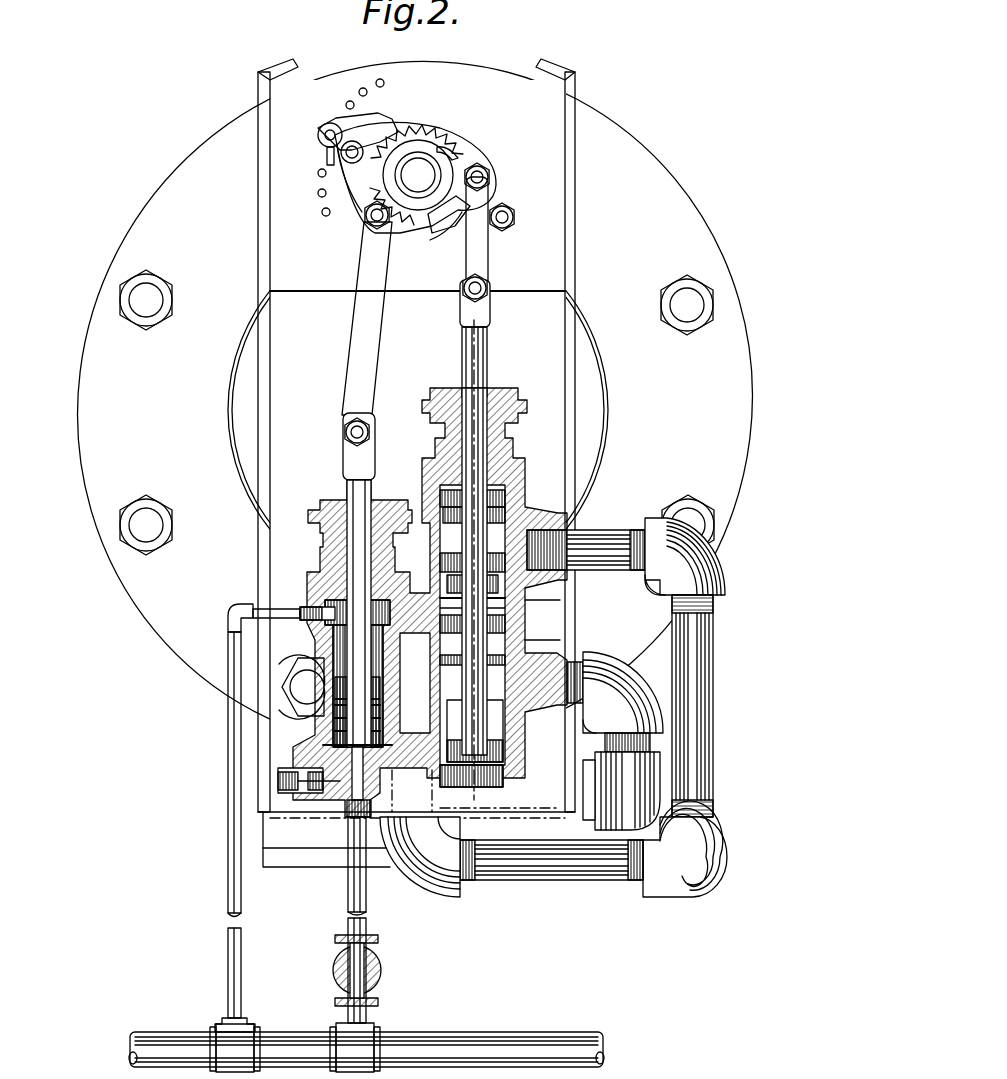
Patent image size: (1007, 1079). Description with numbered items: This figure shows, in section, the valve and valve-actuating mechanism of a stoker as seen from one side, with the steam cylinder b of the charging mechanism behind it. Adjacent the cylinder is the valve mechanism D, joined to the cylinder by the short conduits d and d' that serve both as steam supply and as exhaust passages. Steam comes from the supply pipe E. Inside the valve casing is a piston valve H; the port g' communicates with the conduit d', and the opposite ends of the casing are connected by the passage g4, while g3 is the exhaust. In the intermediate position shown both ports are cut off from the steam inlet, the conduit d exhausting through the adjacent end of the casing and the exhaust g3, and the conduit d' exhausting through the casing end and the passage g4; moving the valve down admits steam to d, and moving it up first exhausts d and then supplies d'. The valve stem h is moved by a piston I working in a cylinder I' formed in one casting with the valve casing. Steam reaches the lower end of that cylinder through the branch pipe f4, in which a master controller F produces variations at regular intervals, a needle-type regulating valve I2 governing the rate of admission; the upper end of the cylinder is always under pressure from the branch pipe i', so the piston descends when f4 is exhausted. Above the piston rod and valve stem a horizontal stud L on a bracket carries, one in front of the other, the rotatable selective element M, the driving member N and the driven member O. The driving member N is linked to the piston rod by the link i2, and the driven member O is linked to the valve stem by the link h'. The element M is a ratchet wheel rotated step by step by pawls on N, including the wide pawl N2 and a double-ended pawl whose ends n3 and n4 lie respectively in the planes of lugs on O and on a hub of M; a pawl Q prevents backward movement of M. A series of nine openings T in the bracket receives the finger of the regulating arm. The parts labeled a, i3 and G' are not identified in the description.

The steam cylinder b is at (436, 434).
The driven member O is at (470, 160).
The horizontal stud L is at (408, 176).
The rotatable selective element M is at (407, 130).
The pawl end n3 is at (455, 160).
The wide pawl N2 is at (366, 133).
The driving member N is at (360, 200).
The openings T is at (380, 79).
The pawl Q is at (452, 228).
The pawl end n4 is at (437, 230).
The link i2 is at (360, 348).
The valve stem i3 is at (350, 488).
The link h' is at (495, 252).
The valve stem h is at (496, 362).
The valve casing a is at (527, 482).
The cylinder I' is at (302, 613).
The piston I is at (269, 766).
The regulating valve I2 is at (275, 778).
The passage g4 is at (530, 505).
The port g' is at (530, 545).
The piston valve H is at (512, 598).
The valve mechanism D is at (545, 617).
The valve G' is at (500, 640).
The exhaust pipe g3 is at (492, 792).
The conduit d' is at (568, 703).
The conduit d is at (622, 728).
The branch pipe i' is at (239, 818).
The branch pipe f4 is at (350, 880).
The master controller F is at (378, 960).
The supply pipe E is at (447, 1037).